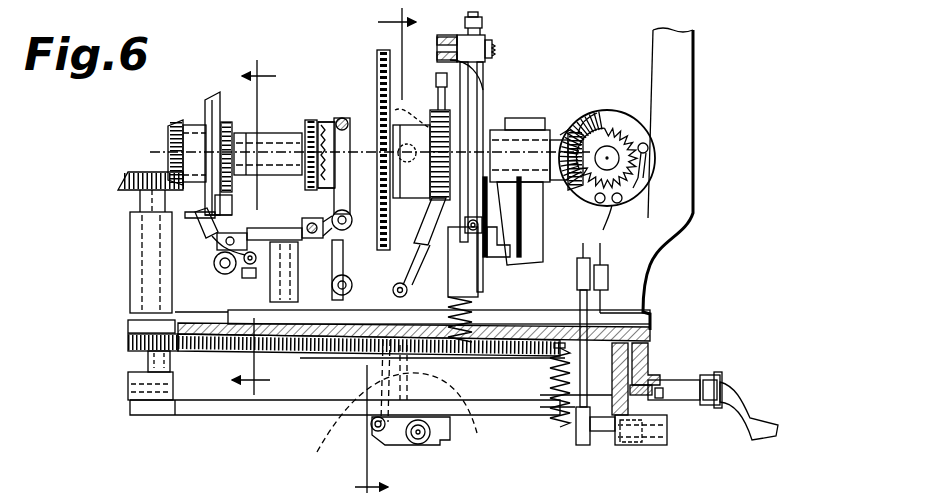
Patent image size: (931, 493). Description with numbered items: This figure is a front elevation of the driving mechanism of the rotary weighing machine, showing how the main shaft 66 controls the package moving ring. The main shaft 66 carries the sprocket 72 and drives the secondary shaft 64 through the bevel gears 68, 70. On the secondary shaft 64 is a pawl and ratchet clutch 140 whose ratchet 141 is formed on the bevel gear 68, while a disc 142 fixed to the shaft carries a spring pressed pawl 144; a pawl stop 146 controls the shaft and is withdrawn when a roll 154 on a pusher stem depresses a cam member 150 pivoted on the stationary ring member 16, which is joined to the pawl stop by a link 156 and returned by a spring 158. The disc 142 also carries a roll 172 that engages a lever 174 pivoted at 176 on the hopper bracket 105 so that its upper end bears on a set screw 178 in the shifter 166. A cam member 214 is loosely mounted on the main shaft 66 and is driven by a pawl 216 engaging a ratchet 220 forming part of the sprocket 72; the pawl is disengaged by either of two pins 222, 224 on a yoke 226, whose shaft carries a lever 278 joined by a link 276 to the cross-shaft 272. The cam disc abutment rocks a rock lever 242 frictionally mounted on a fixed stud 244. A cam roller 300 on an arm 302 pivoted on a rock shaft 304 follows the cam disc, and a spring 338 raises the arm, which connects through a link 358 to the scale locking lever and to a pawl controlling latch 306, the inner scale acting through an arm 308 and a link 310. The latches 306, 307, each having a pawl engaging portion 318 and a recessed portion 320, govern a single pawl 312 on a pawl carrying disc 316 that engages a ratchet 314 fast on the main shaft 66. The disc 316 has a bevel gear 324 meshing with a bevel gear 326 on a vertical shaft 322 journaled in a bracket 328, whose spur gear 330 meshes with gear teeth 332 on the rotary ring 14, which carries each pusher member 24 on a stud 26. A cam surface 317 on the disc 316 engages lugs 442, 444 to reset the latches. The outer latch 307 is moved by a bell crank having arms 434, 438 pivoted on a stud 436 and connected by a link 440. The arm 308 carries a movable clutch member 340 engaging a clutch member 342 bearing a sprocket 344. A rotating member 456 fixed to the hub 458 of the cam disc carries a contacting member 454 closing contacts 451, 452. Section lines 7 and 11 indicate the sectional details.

The section line 7— 7 is at (374, 250).
The section line 11— 11 is at (266, 227).
The rotary ring member 14 is at (648, 378).
The stationary supporting ring member 16 is at (583, 445).
The pusher member 24 is at (748, 420).
The stud 26 is at (702, 384).
The secondary shaft 64 is at (612, 120).
The main shaft 66 is at (195, 113).
The bevel gear 68 is at (645, 125).
The bevel gear 70 is at (607, 158).
The sprocket 72 is at (377, 62).
The hopper bracket 105 is at (683, 115).
The pawl and ratchet clutch 140 is at (650, 200).
The ratchet 141 is at (650, 173).
The disc 142 is at (648, 152).
The spring pressed pawl 144 is at (598, 205).
The pawl stop 146 is at (600, 210).
The cam member 150 is at (670, 436).
The roll 154 is at (690, 378).
The link 156 is at (646, 344).
The spring 158 is at (556, 418).
The shifter 166 is at (580, 112).
The roll 172 is at (700, 248).
The lever 174 is at (601, 134).
The pivot 176 is at (594, 299).
The set screw 178 is at (595, 113).
The cam member 214 is at (485, 75).
The pawl 216 is at (436, 86).
The ratchet 220 is at (396, 246).
The upper pin 222 is at (400, 56).
The lower pin 224 is at (393, 290).
The yoke 226 is at (436, 58).
The rock lever 242 is at (483, 96).
The fixed stud 244 is at (480, 46).
The cross-shaft 272 is at (415, 444).
The link 276 is at (322, 440).
The lever 278 is at (404, 110).
The cam roller 300 is at (430, 350).
The arm 302 is at (436, 341).
The rock shaft 304 is at (320, 290).
The pawl controlling latch 306 is at (215, 233).
The pawl controlling latch 307 is at (217, 240).
The arm 308 is at (318, 345).
The link 310 is at (274, 312).
The pawl 312 is at (140, 200).
The ratchet 314 is at (218, 95).
The pawl carrying disc 316 is at (205, 100).
The cam surface 317 is at (208, 105).
The pawl engaging portion 318 is at (245, 232).
The recessed portion 320 is at (233, 250).
The vertical shaft 322 is at (112, 312).
The bevel gear 324 is at (168, 137).
The bevel gear 326 is at (128, 177).
The bracket 328 is at (130, 243).
The spur gear 330 is at (128, 343).
The gear teeth 332 is at (176, 356).
The spring 338 is at (478, 315).
The movable clutch member 340 is at (324, 120).
The clutch member 342 is at (323, 124).
The sprocket 344 is at (310, 122).
The link 358 is at (417, 412).
The arm 434 is at (250, 268).
The stud 436 is at (292, 268).
The arm 438 is at (302, 245).
The link 440 is at (231, 350).
The lug 442 is at (205, 225).
The lug 444 is at (205, 207).
The contact 451 is at (470, 266).
The contact 452 is at (607, 237).
The contacting member 454 is at (607, 222).
The rotating member 456 is at (493, 130).
The hub 458 is at (486, 118).